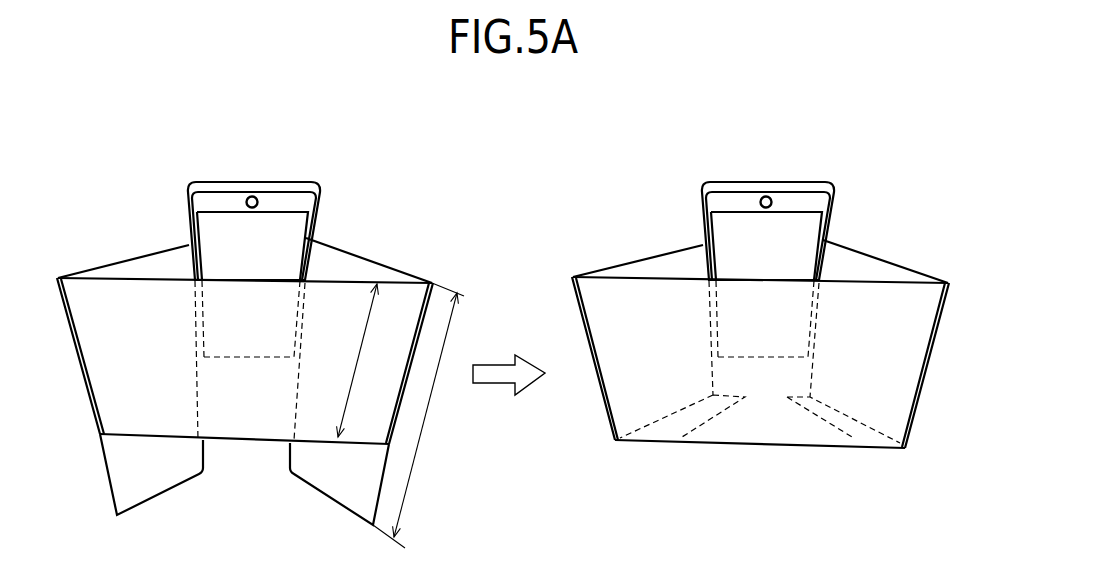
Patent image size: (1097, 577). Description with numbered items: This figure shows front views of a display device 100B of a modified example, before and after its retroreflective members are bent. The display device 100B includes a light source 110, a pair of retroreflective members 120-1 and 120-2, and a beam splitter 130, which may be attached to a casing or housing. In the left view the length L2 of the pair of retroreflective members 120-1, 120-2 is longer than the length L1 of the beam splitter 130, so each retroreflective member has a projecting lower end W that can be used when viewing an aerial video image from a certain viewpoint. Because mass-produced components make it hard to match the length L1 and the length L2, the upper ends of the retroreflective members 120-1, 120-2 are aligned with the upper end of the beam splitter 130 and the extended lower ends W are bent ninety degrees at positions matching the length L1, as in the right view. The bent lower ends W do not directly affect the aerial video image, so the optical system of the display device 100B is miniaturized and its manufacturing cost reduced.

The light source 110 is at (258, 181).
The retroreflective member 120-1 is at (102, 263).
The retroreflective member 120-2 is at (402, 267).
The beam splitter 130 is at (245, 422).
The lower end W is at (162, 495).
The length of the beam splitter L1 is at (366, 360).
The length of the retroreflective members L2 is at (418, 415).
The display device 100B is at (549, 155).